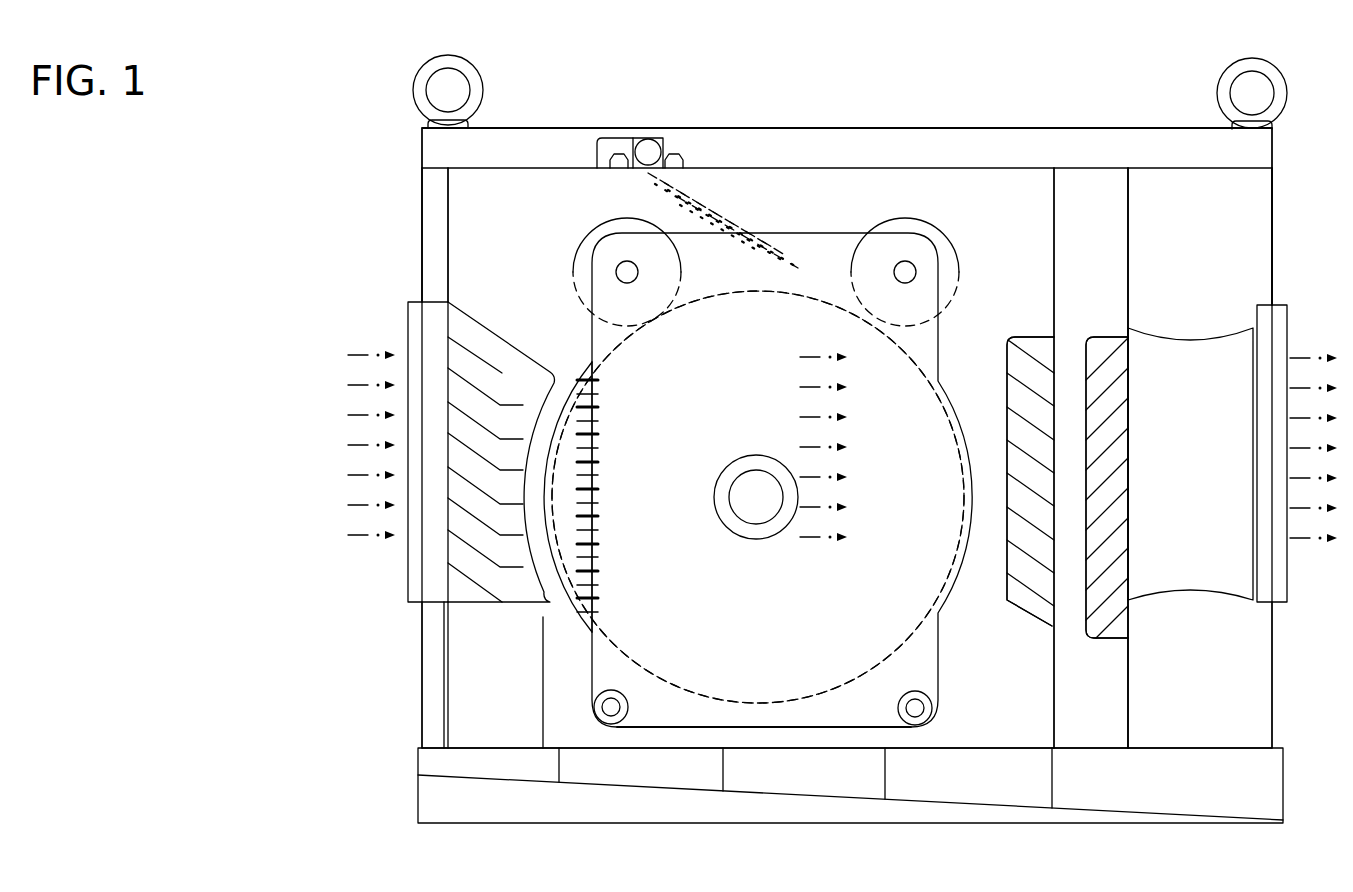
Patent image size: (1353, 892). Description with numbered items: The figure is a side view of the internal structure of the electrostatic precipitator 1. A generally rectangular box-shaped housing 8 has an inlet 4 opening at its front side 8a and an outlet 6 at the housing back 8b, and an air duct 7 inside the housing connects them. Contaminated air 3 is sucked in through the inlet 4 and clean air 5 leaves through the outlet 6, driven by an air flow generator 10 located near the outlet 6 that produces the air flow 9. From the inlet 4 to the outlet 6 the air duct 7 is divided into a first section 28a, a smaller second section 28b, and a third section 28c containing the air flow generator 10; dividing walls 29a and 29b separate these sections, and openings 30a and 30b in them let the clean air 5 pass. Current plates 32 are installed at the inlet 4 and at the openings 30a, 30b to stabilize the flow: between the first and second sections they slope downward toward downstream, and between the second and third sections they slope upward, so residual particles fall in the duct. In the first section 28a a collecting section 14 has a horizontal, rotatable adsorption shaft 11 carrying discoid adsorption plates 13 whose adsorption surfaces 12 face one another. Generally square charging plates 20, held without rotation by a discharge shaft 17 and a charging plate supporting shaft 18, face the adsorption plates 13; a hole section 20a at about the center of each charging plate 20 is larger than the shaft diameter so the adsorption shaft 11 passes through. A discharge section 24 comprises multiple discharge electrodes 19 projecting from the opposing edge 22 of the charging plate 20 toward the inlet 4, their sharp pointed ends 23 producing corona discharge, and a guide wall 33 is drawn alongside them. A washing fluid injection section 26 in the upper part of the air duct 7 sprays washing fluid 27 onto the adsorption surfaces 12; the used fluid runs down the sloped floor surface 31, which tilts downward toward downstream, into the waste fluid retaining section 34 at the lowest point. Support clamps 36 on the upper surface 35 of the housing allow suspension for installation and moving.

The electrostatic precipitator 1 is at (583, 83).
The contaminated air 3 is at (380, 318).
The inlet 4 is at (417, 588).
The clean air 5 is at (1308, 318).
The outlet 6 is at (1267, 573).
The air duct 7 is at (760, 120).
The housing 8 is at (925, 140).
The housing front side 8a is at (420, 262).
The housing back 8b is at (1273, 262).
The air flow 9 is at (787, 358).
The air flow generator 10 is at (1187, 582).
The adsorption shaft 11 is at (755, 526).
The adsorption surface 12 is at (930, 578).
The adsorption plate 13 is at (785, 497).
The collecting section 14 is at (985, 663).
The discharge shaft 17 is at (616, 272).
The charging plate supporting shaft 18 is at (618, 718).
The discharge electrode 19 is at (599, 380).
The charging plate 20 is at (764, 755).
The hole section 20a is at (718, 512).
The opposing edge 22 is at (590, 660).
The pointed end 23 is at (576, 598).
The discharge section 24 is at (533, 660).
The washing fluid injection section 26 is at (666, 152).
The washing fluid 27 is at (745, 215).
The first section 28a is at (538, 236).
The second section 28b is at (1120, 236).
The third section 28c is at (1228, 236).
The dividing wall 29a is at (1052, 290).
The dividing wall 29b is at (1128, 275).
The opening 30a is at (1048, 618).
The opening 30b is at (1122, 628).
The sloped floor surface 31 is at (1127, 814).
The current plate 32 is at (460, 340).
The guide wall 33 is at (562, 400).
The waste fluid retaining section 34 is at (1197, 765).
The upper surface 35 is at (993, 130).
The support clamp 36 is at (483, 96).